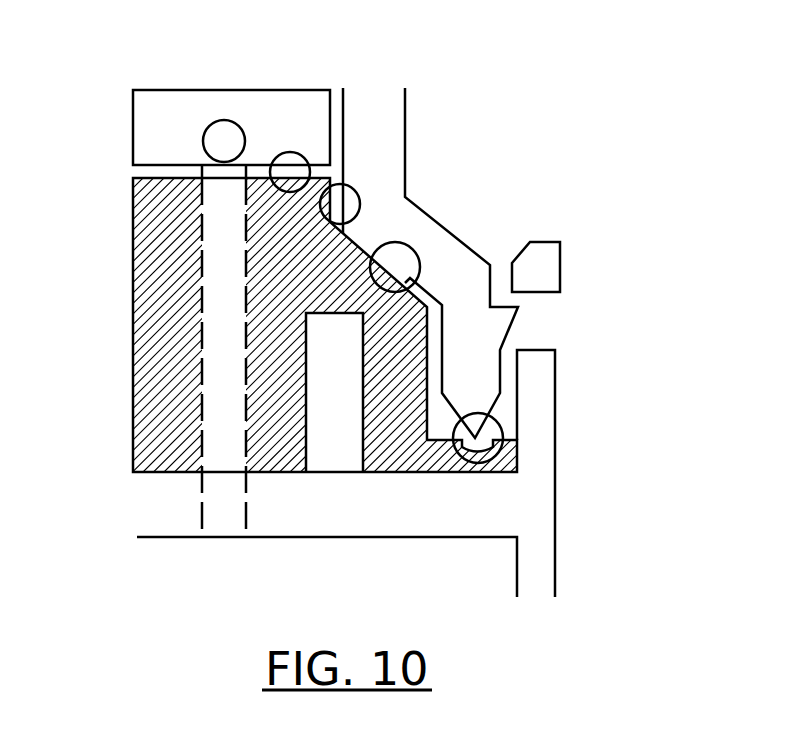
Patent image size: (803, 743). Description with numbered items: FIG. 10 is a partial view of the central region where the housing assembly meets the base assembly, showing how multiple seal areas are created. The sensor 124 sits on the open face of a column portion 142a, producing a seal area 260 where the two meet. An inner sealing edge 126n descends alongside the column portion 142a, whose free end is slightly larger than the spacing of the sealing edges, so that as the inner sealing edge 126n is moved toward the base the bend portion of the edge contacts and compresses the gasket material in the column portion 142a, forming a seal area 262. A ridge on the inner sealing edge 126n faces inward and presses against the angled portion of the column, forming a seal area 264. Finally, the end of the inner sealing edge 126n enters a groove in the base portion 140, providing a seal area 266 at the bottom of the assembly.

The sensor 124 is at (180, 140).
The inner sealing edge 126n is at (407, 138).
The base portion 140 is at (407, 474).
The column portion 142a is at (132, 300).
The seal area 260 is at (287, 152).
The seal area 262 is at (354, 189).
The seal area 264 is at (419, 256).
The seal area 266 is at (478, 413).